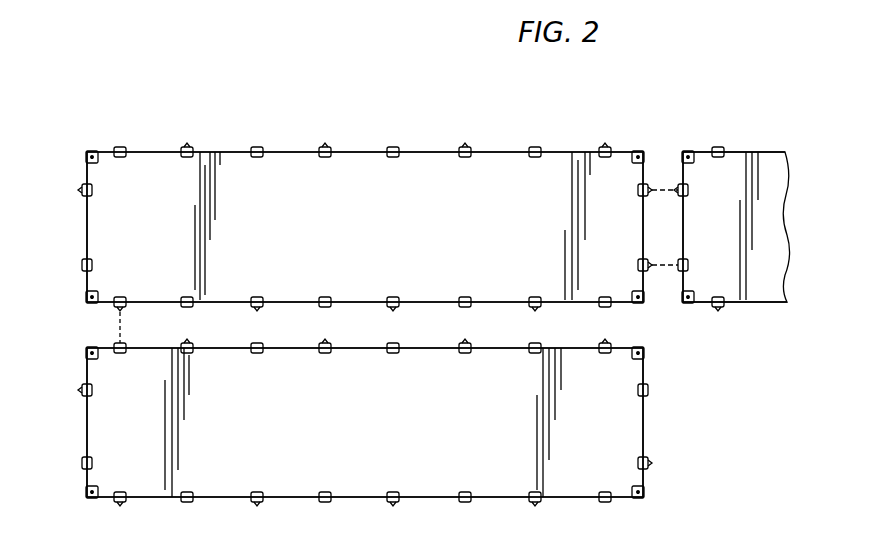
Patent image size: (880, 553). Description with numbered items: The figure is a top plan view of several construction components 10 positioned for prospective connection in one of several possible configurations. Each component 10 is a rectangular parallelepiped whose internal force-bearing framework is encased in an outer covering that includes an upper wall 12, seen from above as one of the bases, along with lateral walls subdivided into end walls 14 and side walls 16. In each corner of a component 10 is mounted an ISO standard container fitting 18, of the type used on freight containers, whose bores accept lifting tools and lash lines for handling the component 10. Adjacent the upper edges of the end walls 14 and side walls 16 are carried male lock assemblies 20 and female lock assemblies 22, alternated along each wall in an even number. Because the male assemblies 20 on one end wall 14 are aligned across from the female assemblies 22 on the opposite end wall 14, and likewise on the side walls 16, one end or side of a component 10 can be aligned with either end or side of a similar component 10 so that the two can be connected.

The construction component 10 is at (415, 98).
The upper wall 12 is at (365, 229).
The end wall 14 is at (86, 178).
The side wall 16 is at (287, 150).
The ISO standard container fitting 18 is at (92, 148).
The upper male lock assembly 20 is at (190, 146).
The upper female lock assembly 22 is at (256, 146).